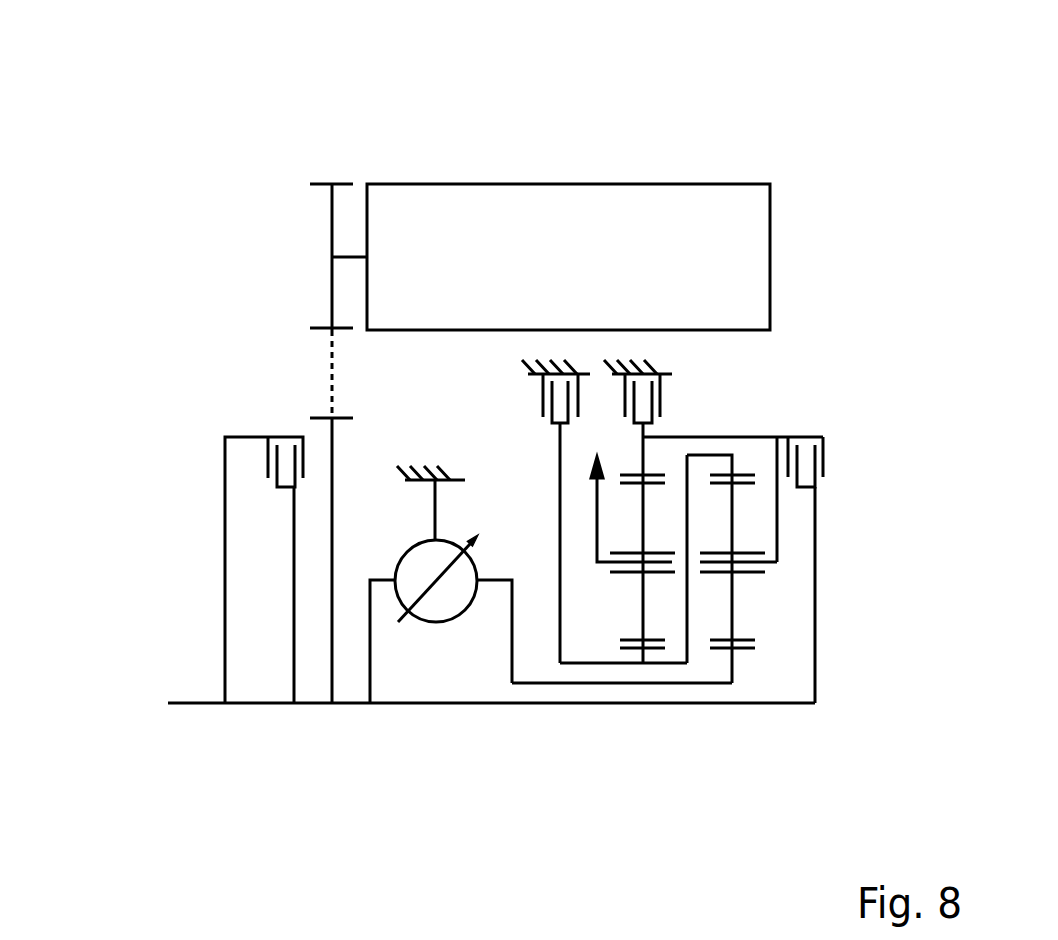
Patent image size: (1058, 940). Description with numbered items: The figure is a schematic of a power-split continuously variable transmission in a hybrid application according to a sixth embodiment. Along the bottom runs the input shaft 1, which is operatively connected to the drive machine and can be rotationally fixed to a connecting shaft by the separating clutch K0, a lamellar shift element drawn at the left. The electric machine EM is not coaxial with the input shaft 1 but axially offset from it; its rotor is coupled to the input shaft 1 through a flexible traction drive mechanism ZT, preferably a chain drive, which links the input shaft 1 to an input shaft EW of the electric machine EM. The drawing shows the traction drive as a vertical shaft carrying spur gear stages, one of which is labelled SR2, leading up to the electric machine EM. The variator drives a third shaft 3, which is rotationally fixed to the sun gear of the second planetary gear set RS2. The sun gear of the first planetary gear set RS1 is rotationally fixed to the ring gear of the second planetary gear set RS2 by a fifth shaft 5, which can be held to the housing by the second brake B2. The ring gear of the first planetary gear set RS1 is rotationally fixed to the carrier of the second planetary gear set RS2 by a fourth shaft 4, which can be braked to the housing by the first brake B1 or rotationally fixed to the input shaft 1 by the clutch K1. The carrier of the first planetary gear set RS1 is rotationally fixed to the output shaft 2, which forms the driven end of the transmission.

The spur gear stage SR2 is at (332, 184).
The input shaft of the electric machine EW is at (341, 257).
The electric machine EM is at (560, 184).
The flexible traction drive mechanism ZT is at (330, 383).
The separating clutch K0 is at (260, 465).
The clutch K1 is at (828, 465).
The first brake B1 is at (665, 400).
The second brake B2 is at (540, 400).
The first planetary gear set RS1 is at (642, 718).
The second planetary gear set RS2 is at (733, 718).
The input shaft 1 is at (348, 703).
The output shaft 2 is at (597, 513).
The third shaft 3 is at (527, 683).
The fourth shaft 4 is at (733, 437).
The fifth shaft 5 is at (587, 663).